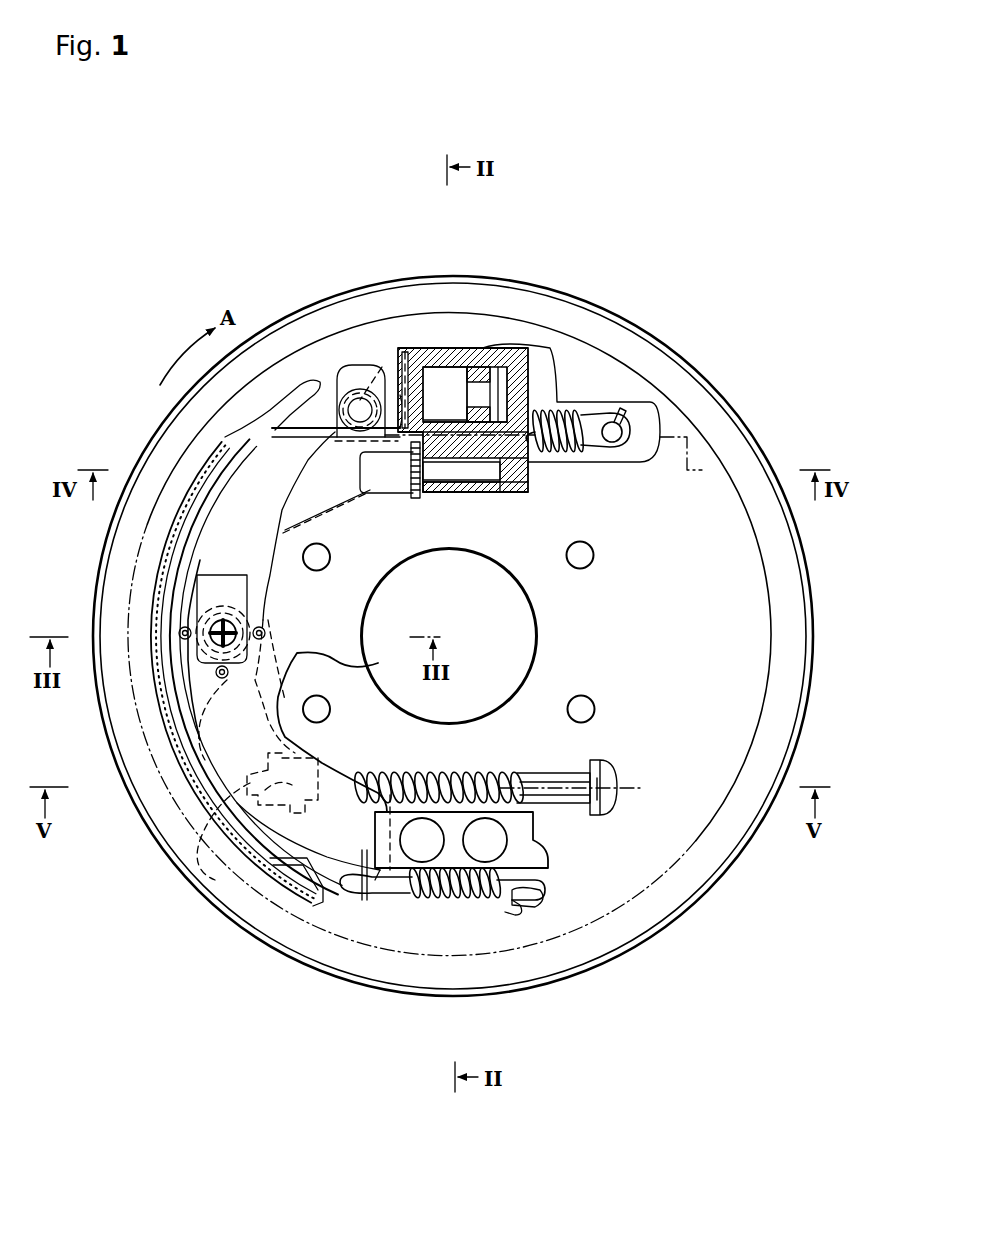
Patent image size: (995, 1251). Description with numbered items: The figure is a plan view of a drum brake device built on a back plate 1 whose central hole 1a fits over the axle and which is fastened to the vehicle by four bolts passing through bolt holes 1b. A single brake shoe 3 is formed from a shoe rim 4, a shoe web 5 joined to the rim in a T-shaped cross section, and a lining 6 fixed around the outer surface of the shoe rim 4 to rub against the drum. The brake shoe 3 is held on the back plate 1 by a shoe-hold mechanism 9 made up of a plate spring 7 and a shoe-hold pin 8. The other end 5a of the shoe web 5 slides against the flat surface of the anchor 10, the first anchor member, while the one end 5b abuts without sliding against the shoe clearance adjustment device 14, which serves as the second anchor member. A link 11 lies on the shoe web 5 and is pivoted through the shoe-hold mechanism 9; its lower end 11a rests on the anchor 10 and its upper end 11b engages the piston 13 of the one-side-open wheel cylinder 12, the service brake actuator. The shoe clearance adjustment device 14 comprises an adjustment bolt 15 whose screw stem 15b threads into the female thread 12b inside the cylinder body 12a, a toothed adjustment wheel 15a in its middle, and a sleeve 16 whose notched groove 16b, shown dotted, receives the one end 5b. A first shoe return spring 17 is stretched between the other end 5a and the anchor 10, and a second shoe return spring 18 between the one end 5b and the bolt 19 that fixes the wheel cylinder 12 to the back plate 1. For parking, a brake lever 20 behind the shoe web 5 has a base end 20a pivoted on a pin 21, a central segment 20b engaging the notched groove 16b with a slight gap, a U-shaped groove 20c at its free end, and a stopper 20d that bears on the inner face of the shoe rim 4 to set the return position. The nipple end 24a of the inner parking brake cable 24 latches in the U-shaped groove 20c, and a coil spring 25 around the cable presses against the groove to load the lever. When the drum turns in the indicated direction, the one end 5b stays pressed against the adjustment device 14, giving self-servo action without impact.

The back plate 1 is at (707, 892).
The central hole 1a is at (533, 616).
The bolt holes 1b is at (570, 702).
The brake shoe 3 is at (162, 806).
The shoe rim 4 is at (186, 806).
The shoe web 5 is at (170, 752).
The other end of shoe web 5a is at (362, 850).
The one end of shoe web 5b is at (377, 554).
The lining 6 is at (212, 728).
The plate spring 7 is at (197, 592).
The shoe-hold pin 8 is at (215, 674).
The shoe-hold mechanism 9 is at (207, 631).
The anchor 10 is at (417, 907).
The link 11 is at (212, 565).
The lower end of link 11a is at (362, 905).
The upper end of link 11b is at (398, 395).
The wheel cylinder 12 is at (471, 345).
The cylinder body 12a is at (540, 352).
The female thread 12b is at (530, 470).
The piston 13 is at (440, 370).
The shoe clearance adjustment device 14 is at (456, 542).
The adjustment bolt 15 is at (500, 494).
The toothed adjustment wheel 15a is at (466, 494).
The screw stem 15b is at (523, 492).
The sleeve 16 is at (412, 500).
The notched groove 16b is at (411, 498).
The first shoe return spring 17 is at (462, 898).
The second shoe return spring 18 is at (577, 412).
The bolt 19 is at (617, 424).
The brake lever 20 is at (352, 671).
The base end 20a is at (333, 393).
The central segment 20b is at (350, 522).
The U-shaped groove 20c is at (215, 880).
The stopper 20d is at (192, 727).
The pin 21 is at (338, 385).
The inner parking brake cable 24 is at (565, 792).
The nipple end 24a is at (332, 906).
The coil spring 25 is at (458, 773).